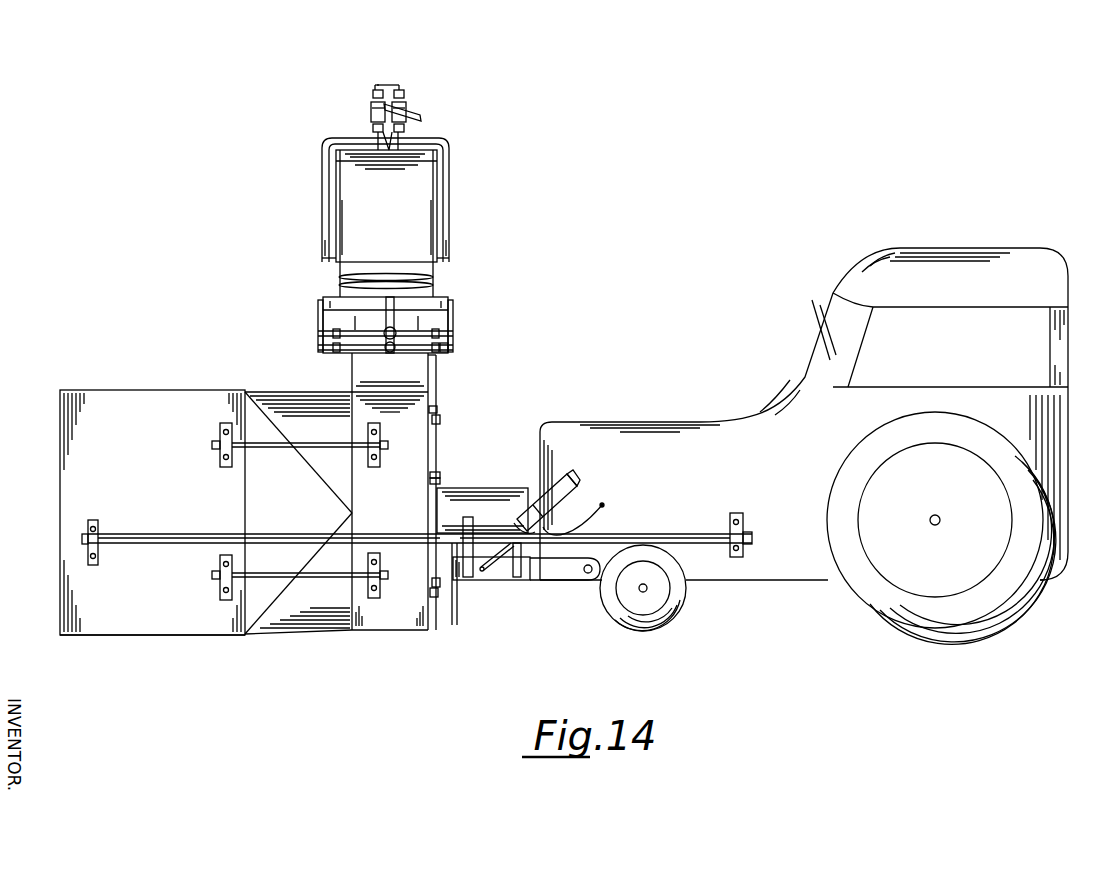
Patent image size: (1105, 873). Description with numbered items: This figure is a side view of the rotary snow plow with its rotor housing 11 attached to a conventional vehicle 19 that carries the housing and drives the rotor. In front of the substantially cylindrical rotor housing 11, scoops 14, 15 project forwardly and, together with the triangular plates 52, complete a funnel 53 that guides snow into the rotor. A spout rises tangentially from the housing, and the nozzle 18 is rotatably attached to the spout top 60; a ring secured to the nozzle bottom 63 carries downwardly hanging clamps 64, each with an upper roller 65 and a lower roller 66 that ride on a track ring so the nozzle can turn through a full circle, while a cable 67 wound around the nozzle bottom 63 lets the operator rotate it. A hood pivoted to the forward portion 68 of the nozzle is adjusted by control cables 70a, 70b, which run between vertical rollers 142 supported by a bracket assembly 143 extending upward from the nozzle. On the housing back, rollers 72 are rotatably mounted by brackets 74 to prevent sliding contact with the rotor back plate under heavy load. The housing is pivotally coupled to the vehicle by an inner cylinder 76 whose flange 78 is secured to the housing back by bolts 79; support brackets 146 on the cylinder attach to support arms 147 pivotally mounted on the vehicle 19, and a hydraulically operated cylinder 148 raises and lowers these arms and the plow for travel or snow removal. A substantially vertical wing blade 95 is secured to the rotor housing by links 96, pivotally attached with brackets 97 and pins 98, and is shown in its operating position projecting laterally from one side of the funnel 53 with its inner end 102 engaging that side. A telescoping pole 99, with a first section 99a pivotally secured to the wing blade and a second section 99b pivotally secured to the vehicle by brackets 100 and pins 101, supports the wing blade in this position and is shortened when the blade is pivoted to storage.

The rotor housing 11 is at (437, 437).
The scoop 14 is at (274, 394).
The scoop 15 is at (294, 622).
The nozzle 18 is at (433, 197).
The vehicle 19 is at (678, 421).
The triangular plate 52 is at (248, 400).
The funnel 53 is at (295, 398).
The spout top 60 is at (432, 318).
The nozzle bottom 63 is at (436, 289).
The clamp 64 is at (453, 306).
The upper roller 65 is at (440, 335).
The lower roller 66 is at (446, 351).
The cable 67 is at (436, 276).
The forward portion of the nozzle 68 is at (336, 195).
The control cable 70a is at (376, 130).
The control cable 70b is at (397, 131).
The roller 72 is at (441, 420).
The bracket 74 is at (437, 408).
The inner cylinder 76 is at (495, 488).
The flange 78 is at (438, 473).
The bolt 79 is at (441, 481).
The wing blade 95 is at (83, 390).
The link 96 is at (280, 448).
The bracket 97 is at (220, 432).
The pin 98 is at (223, 456).
The telescoping pole 99 is at (453, 612).
The first section 99a is at (198, 545).
The second section 99b is at (648, 532).
The bracket 100 is at (99, 523).
The pin 101 is at (88, 530).
The inner end of the wing blade 102 is at (216, 637).
The vertical roller 142 is at (371, 108).
The bracket assembly 143 is at (397, 84).
The support bracket 146 is at (473, 576).
The support arm 147 is at (529, 580).
The hydraulically operated cylinder 148 is at (544, 499).